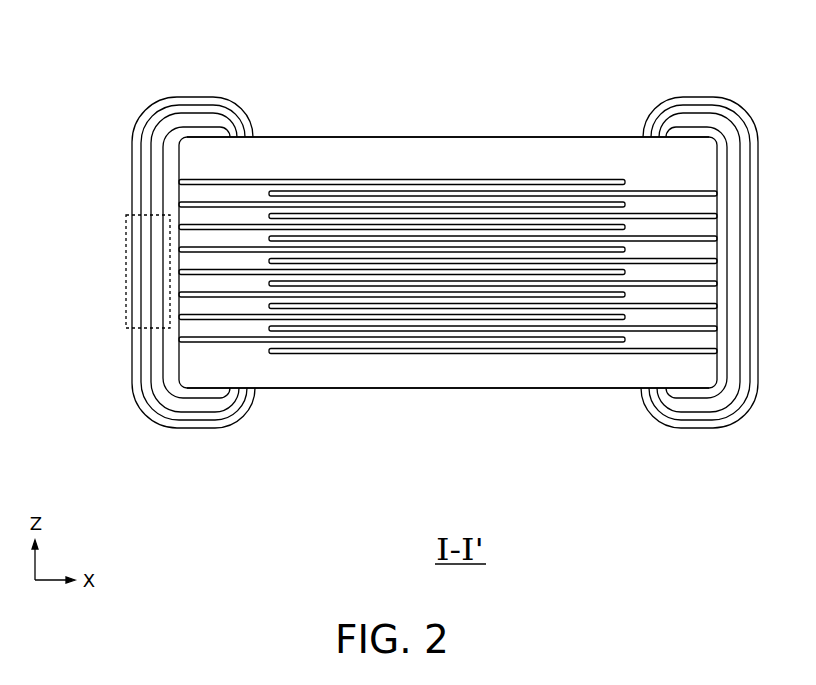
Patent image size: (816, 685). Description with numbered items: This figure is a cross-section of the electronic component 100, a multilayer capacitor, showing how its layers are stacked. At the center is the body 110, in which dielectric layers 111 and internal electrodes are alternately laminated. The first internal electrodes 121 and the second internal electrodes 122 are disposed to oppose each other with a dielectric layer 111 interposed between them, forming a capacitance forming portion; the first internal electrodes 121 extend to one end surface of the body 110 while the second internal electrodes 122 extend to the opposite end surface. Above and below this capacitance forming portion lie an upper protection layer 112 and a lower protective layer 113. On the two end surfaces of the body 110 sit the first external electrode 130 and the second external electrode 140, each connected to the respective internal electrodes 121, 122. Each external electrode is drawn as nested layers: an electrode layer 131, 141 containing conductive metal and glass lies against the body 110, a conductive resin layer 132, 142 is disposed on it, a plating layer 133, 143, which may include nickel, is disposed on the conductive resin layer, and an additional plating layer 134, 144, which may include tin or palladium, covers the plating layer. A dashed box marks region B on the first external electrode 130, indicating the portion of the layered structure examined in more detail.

The electronic component 100 is at (333, 47).
The body 110 is at (442, 390).
The dielectric layer 111 is at (423, 188).
The upper protection layer 112 is at (580, 163).
The lower protective layer 113 is at (523, 380).
The first internal electrode 121 is at (372, 182).
The second internal electrode 122 is at (493, 190).
The first external electrode 130 is at (159, 321).
The electrode layer 131 is at (208, 312).
The conductive resin layer 132 is at (200, 400).
The plating layer 133 is at (162, 427).
The additional plating layer 134 is at (140, 402).
The second external electrode 140 is at (659, 321).
The electrode layer 141 is at (745, 500).
The conductive resin layer 142 is at (667, 427).
The plating layer 143 is at (703, 417).
The additional plating layer 144 is at (728, 433).
The enlarged region B is at (123, 277).